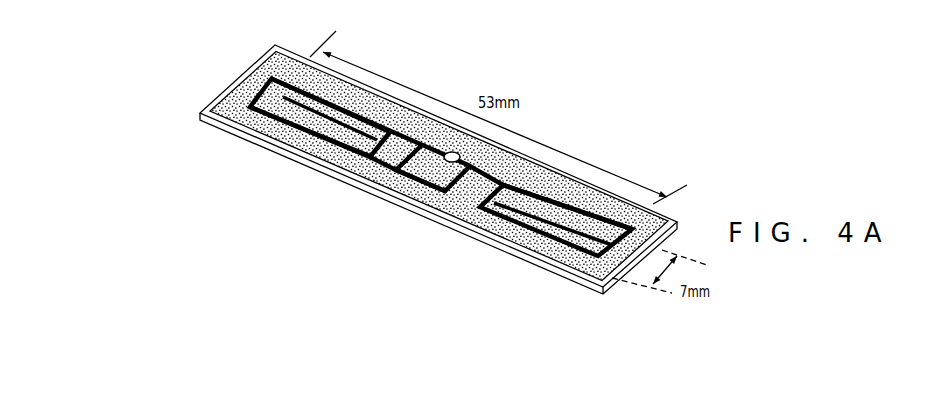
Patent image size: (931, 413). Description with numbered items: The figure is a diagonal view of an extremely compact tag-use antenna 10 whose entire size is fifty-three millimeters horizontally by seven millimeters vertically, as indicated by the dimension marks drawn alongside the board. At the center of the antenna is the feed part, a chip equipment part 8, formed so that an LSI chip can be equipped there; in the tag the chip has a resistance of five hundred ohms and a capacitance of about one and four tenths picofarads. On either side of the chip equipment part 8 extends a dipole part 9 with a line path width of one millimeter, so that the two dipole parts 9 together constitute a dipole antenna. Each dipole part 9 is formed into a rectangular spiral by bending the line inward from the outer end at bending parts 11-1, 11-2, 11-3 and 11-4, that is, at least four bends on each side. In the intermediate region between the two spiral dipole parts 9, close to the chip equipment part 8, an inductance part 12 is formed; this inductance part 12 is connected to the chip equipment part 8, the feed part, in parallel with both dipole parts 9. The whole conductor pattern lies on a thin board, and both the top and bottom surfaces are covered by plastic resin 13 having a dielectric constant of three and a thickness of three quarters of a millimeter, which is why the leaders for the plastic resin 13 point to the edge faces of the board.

The chip equipment part 8 is at (403, 232).
The dipole part 9 is at (333, 207).
The tag-use antenna 10 is at (248, 151).
The bending part 11-1 is at (323, 230).
The bending part 11-2 is at (317, 240).
The bending part 11-3 is at (203, 117).
The bending part 11-4 is at (214, 82).
The inductance part 12 is at (431, 249).
The plastic resin 13 is at (567, 270).